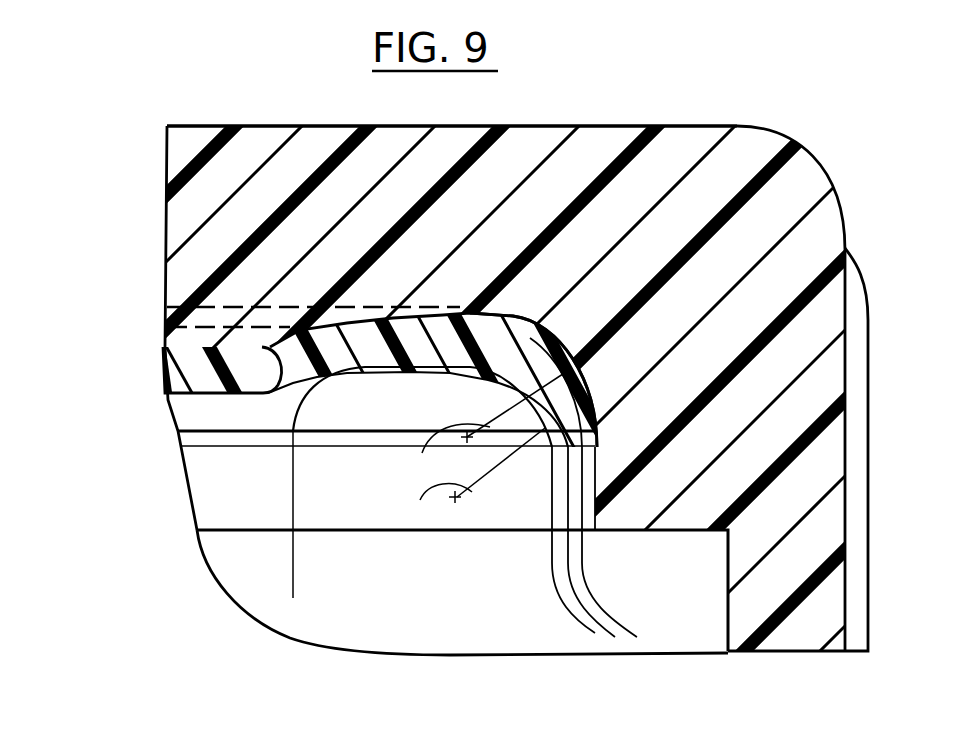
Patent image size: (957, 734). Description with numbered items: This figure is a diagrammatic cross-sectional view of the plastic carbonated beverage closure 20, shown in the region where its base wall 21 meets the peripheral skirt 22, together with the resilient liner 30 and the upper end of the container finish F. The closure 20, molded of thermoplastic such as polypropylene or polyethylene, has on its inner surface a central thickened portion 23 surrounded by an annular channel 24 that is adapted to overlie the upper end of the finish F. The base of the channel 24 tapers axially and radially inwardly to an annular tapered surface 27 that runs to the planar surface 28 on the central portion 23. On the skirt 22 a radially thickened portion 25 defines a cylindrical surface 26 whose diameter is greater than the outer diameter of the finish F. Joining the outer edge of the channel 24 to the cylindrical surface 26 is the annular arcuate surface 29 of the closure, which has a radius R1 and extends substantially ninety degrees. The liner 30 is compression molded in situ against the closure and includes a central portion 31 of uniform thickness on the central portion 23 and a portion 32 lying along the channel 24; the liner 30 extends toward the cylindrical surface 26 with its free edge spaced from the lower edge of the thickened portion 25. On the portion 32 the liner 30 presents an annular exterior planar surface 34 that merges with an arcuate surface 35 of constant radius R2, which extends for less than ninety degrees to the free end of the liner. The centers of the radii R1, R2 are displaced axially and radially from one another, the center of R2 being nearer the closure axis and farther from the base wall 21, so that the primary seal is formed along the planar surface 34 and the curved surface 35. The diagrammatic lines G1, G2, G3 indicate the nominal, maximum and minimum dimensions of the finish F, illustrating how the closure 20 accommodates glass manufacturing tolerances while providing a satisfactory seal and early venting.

The plastic closure 20 is at (700, 113).
The base wall 21 is at (532, 127).
The peripheral skirt 22 is at (805, 637).
The central thickened portion 23 is at (176, 277).
The annular channel 24 is at (358, 328).
The radially thickened portion 25 is at (660, 493).
The cylindrical surface 26 is at (595, 508).
The annular tapered surface 27 is at (260, 389).
The planar surface 28 is at (163, 374).
The annular arcuate surface 29 is at (520, 322).
The liner 30 is at (198, 404).
The central portion of liner 31 is at (170, 400).
The liner portion along channel 32 is at (427, 345).
The annular exterior planar surface 34 is at (358, 375).
The arcuate surface of liner 35 is at (507, 386).
The finish F is at (292, 493).
The radius R1 is at (446, 458).
The radius R2 is at (471, 480).
The nominal dimension G1 is at (615, 638).
The maximum dimension G2 is at (602, 602).
The minimum dimension G3 is at (572, 617).